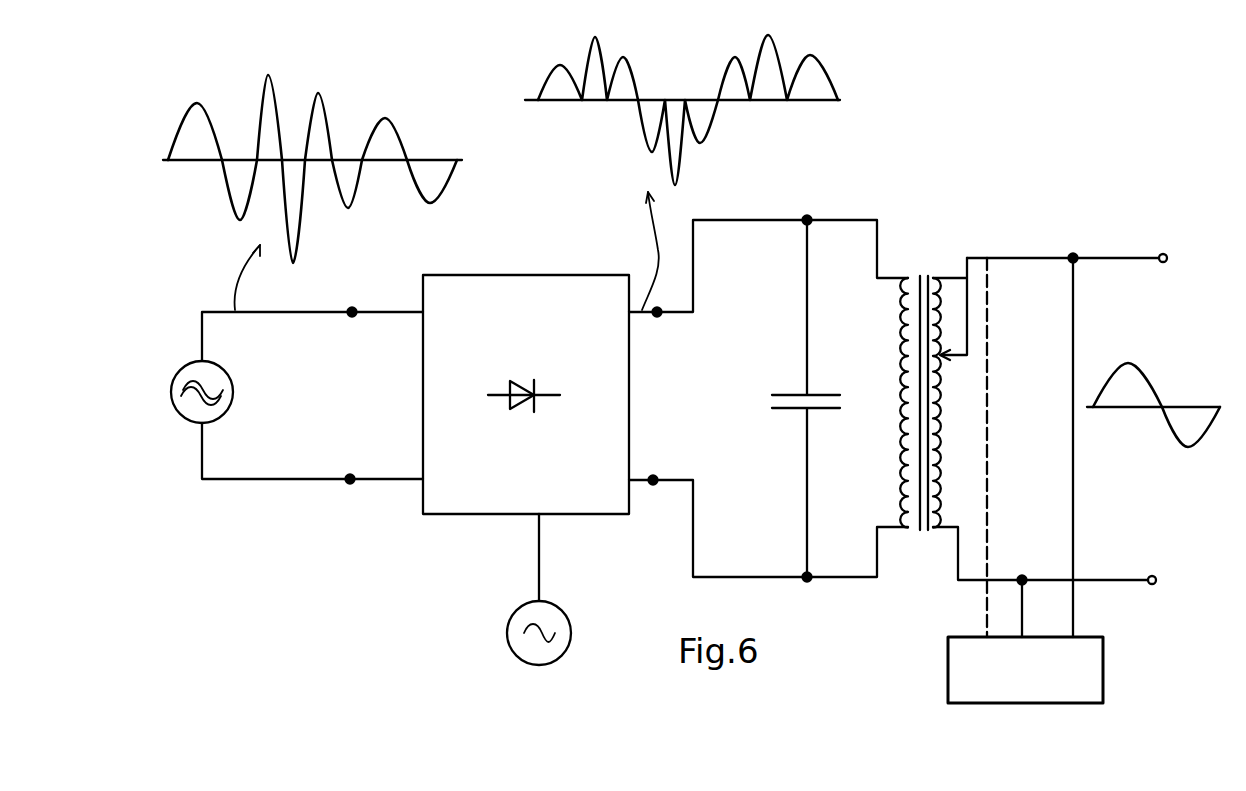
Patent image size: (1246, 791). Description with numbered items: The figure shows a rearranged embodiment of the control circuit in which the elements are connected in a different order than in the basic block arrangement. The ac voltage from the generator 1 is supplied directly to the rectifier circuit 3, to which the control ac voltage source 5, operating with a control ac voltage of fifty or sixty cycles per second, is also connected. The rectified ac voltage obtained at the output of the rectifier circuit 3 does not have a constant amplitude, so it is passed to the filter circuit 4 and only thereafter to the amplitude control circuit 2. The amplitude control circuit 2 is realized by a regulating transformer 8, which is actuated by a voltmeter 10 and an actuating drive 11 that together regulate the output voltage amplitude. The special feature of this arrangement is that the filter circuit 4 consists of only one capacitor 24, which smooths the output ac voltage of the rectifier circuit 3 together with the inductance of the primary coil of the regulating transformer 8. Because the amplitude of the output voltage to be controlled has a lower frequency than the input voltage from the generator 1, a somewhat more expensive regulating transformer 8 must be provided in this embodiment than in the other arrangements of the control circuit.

The generator 1 is at (180, 412).
The rectifier circuit 3 is at (565, 278).
The filter circuit 4 is at (828, 213).
The capacitor 24 is at (790, 393).
The regulating transformer 8 is at (930, 532).
The amplitude control circuit 2 is at (973, 252).
The actuating drive 11 is at (987, 430).
The voltmeter 10 is at (1092, 641).
The control ac voltage source 5 is at (513, 617).